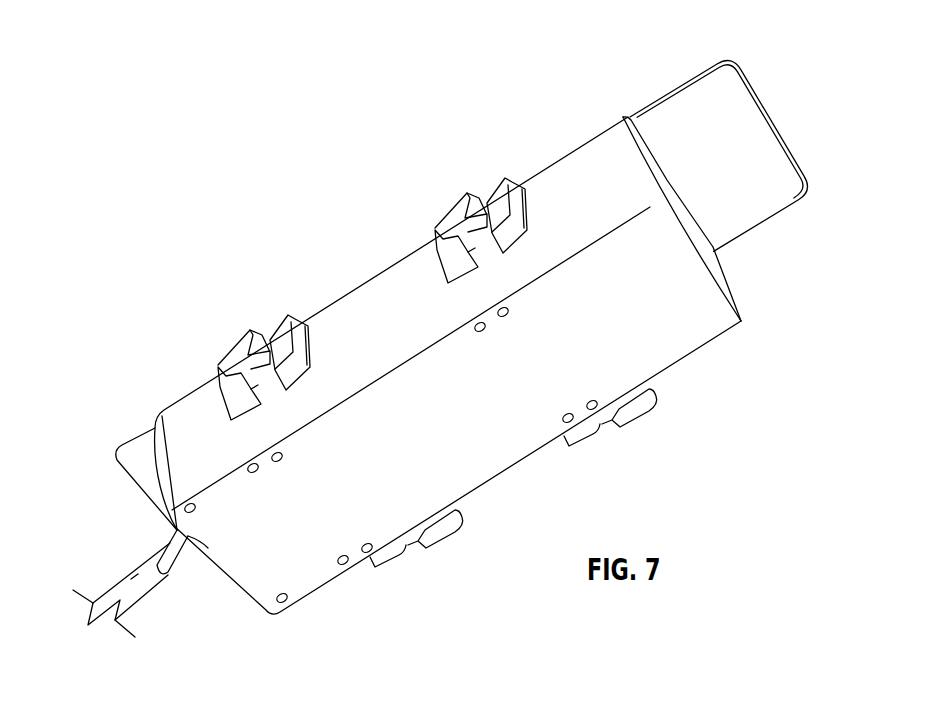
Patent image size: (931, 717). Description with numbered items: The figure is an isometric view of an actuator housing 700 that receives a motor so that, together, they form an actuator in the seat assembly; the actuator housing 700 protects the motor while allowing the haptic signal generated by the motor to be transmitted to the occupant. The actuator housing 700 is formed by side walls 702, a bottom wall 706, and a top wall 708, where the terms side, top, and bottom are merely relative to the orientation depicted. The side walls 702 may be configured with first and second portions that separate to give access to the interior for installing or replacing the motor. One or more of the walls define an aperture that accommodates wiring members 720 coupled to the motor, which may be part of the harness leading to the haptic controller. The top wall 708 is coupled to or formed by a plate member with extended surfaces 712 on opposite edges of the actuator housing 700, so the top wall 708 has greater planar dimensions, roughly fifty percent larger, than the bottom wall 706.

The actuator housing 700 is at (238, 190).
The side walls 702 is at (150, 443).
The bottom wall 706 is at (300, 585).
The top wall 708 is at (745, 88).
The extended surface 712 is at (705, 85).
The wiring members 720 is at (123, 573).